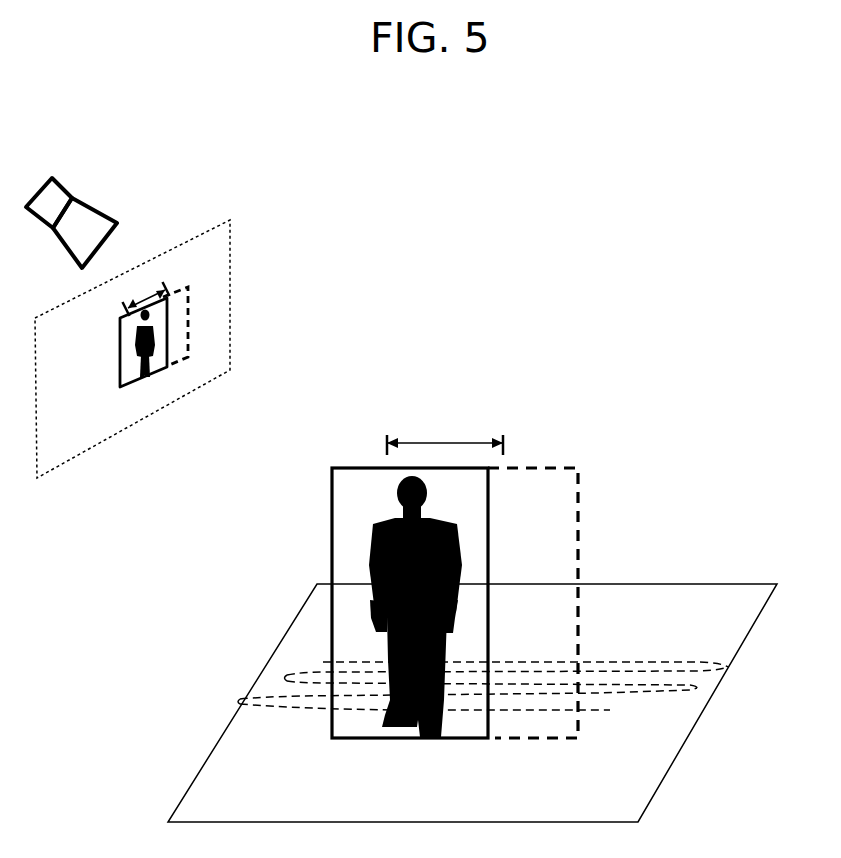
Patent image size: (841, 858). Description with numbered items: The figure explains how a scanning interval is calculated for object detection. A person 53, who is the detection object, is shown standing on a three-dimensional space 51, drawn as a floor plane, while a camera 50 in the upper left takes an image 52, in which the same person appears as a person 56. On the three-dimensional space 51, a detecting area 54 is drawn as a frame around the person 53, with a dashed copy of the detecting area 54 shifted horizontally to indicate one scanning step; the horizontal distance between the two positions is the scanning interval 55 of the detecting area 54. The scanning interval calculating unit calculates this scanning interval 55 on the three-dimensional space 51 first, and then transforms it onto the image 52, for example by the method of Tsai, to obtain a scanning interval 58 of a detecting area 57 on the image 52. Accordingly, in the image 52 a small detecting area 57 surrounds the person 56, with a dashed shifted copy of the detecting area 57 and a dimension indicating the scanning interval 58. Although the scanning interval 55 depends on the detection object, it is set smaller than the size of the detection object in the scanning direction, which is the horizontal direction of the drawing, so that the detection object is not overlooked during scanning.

The camera 50 is at (68, 190).
The three-dimensional space 51 is at (743, 594).
The image 52 is at (232, 247).
The person 53 is at (370, 543).
The detecting area 54 is at (331, 483).
The scanning interval 55 is at (450, 442).
The person 56 is at (136, 337).
The detecting area 57 is at (190, 337).
The scanning interval 58 is at (147, 293).